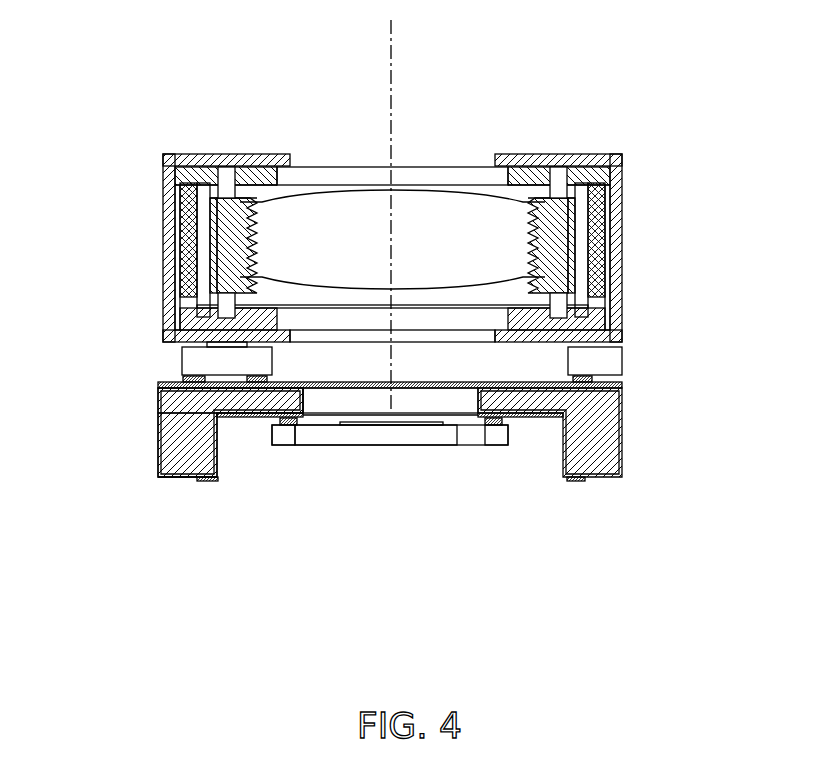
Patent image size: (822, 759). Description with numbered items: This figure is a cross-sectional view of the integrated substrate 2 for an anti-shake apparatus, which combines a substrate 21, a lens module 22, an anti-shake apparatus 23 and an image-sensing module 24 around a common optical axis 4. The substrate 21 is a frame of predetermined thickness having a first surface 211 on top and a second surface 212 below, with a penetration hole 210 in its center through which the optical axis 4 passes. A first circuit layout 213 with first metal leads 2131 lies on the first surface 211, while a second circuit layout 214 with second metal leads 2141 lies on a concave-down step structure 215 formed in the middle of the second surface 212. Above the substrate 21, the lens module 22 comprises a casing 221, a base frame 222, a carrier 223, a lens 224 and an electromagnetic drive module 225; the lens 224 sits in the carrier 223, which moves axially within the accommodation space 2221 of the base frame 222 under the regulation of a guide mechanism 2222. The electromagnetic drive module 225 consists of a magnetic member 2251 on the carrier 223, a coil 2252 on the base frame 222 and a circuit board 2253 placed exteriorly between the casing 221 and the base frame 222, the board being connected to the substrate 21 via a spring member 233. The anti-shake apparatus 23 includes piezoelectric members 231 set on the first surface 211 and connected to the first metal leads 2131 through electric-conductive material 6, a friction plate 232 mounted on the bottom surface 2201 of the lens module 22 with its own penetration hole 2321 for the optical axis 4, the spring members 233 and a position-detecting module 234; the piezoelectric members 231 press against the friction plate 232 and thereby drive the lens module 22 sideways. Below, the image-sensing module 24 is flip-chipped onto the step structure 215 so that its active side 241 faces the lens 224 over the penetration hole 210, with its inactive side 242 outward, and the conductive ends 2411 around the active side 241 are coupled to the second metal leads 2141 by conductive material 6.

The integrated substrate for an anti-shake apparatus 2 is at (666, 133).
The optical axis 4 is at (391, 92).
The electric-conductive material 6 is at (185, 379).
The substrate 21 is at (603, 425).
The lens module 22 is at (40, 24).
The anti-shake apparatus 23 is at (736, 205).
The image-sensing module 24 is at (362, 442).
The penetration hole 210 is at (363, 393).
The first surface 211 is at (180, 390).
The second surface 212 is at (183, 478).
The first circuit layout 213 is at (158, 458).
The second circuit layout 214 is at (198, 484).
The step structure 215 is at (245, 436).
The casing 221 is at (200, 170).
The base frame 222 is at (180, 195).
The carrier 223 is at (183, 220).
The lens 224 is at (335, 200).
The electromagnetic drive module 225 is at (92, 146).
The piezoelectric member 231 is at (605, 302).
The friction plate 232 is at (610, 297).
The spring member 233 is at (160, 352).
The position-detecting module 234 is at (615, 360).
The active side 241 is at (457, 426).
The inactive side 242 is at (425, 447).
The first metal lead 2131 is at (625, 395).
The second metal lead 2141 is at (575, 480).
The bottom surface 2201 is at (160, 309).
The accommodation space 2221 is at (513, 192).
The guide mechanism 2222 is at (223, 178).
The magnetic member 2251 is at (200, 208).
The coil 2252 is at (190, 245).
The circuit board 2253 is at (197, 268).
The penetration hole 2321 is at (333, 335).
The conductive end 2411 is at (290, 428).